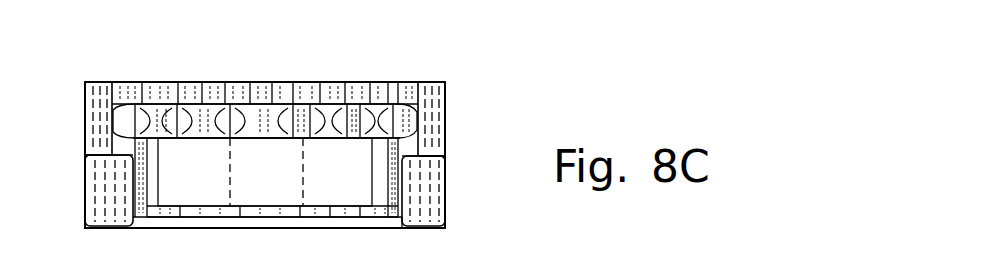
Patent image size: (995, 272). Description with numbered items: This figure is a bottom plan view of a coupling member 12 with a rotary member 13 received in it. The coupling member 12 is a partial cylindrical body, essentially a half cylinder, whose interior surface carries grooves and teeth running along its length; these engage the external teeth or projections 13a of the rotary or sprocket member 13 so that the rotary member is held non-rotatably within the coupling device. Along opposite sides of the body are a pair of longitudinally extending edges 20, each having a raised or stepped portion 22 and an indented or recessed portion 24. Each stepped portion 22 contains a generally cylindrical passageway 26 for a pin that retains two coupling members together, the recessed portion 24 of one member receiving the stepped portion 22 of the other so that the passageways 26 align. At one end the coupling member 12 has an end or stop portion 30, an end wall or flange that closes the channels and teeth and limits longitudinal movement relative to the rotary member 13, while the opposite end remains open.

The coupling member 12 is at (450, 104).
The rotary or sprocket member 13 is at (267, 156).
The teeth or projections 13a is at (398, 82).
The longitudinally extending edge 20 is at (86, 162).
The raised or stepped portion 22 is at (88, 187).
The indented or recessed portion 24 is at (90, 114).
The cylindrical passageway 26 is at (420, 226).
The end or stop portion 30 is at (327, 218).